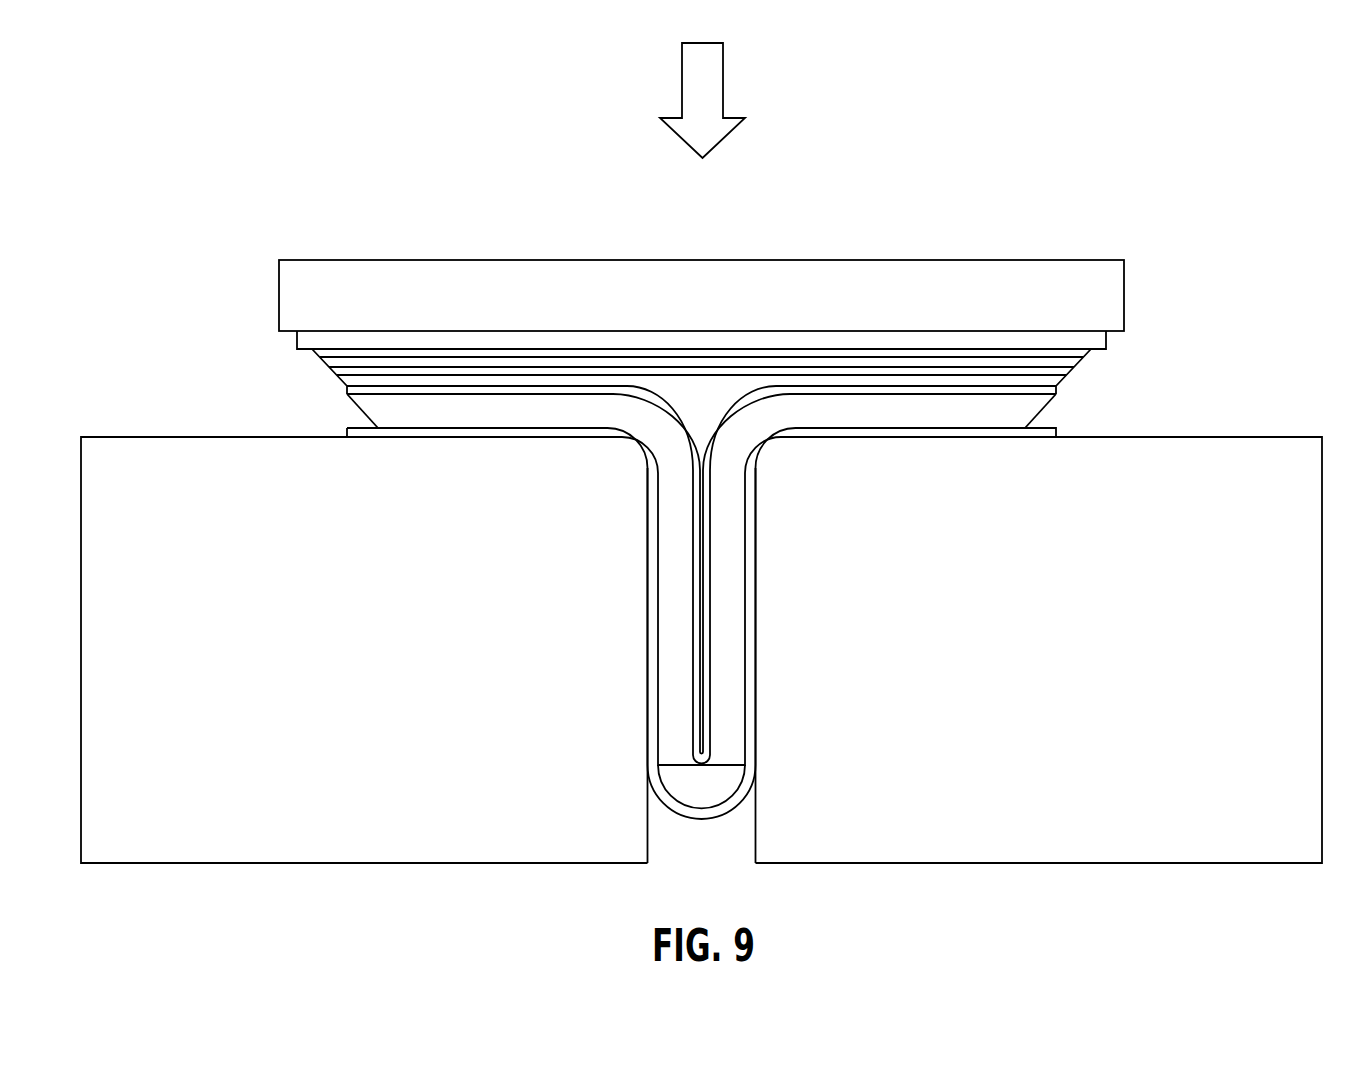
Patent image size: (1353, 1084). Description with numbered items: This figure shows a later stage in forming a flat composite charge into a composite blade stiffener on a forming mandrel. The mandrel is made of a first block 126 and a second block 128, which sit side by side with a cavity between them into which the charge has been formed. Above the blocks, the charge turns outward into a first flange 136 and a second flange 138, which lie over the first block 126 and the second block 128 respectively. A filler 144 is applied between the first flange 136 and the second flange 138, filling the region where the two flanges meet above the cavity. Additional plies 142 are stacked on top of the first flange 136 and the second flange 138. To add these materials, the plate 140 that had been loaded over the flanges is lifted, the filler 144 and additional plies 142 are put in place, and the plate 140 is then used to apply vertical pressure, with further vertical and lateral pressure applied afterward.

The first block 126 is at (280, 829).
The second block 128 is at (1020, 829).
The first flange 136 is at (352, 413).
The second flange 138 is at (1050, 416).
The plate 140 is at (932, 342).
The additional plies 142 is at (1078, 369).
The filler 144 is at (695, 398).